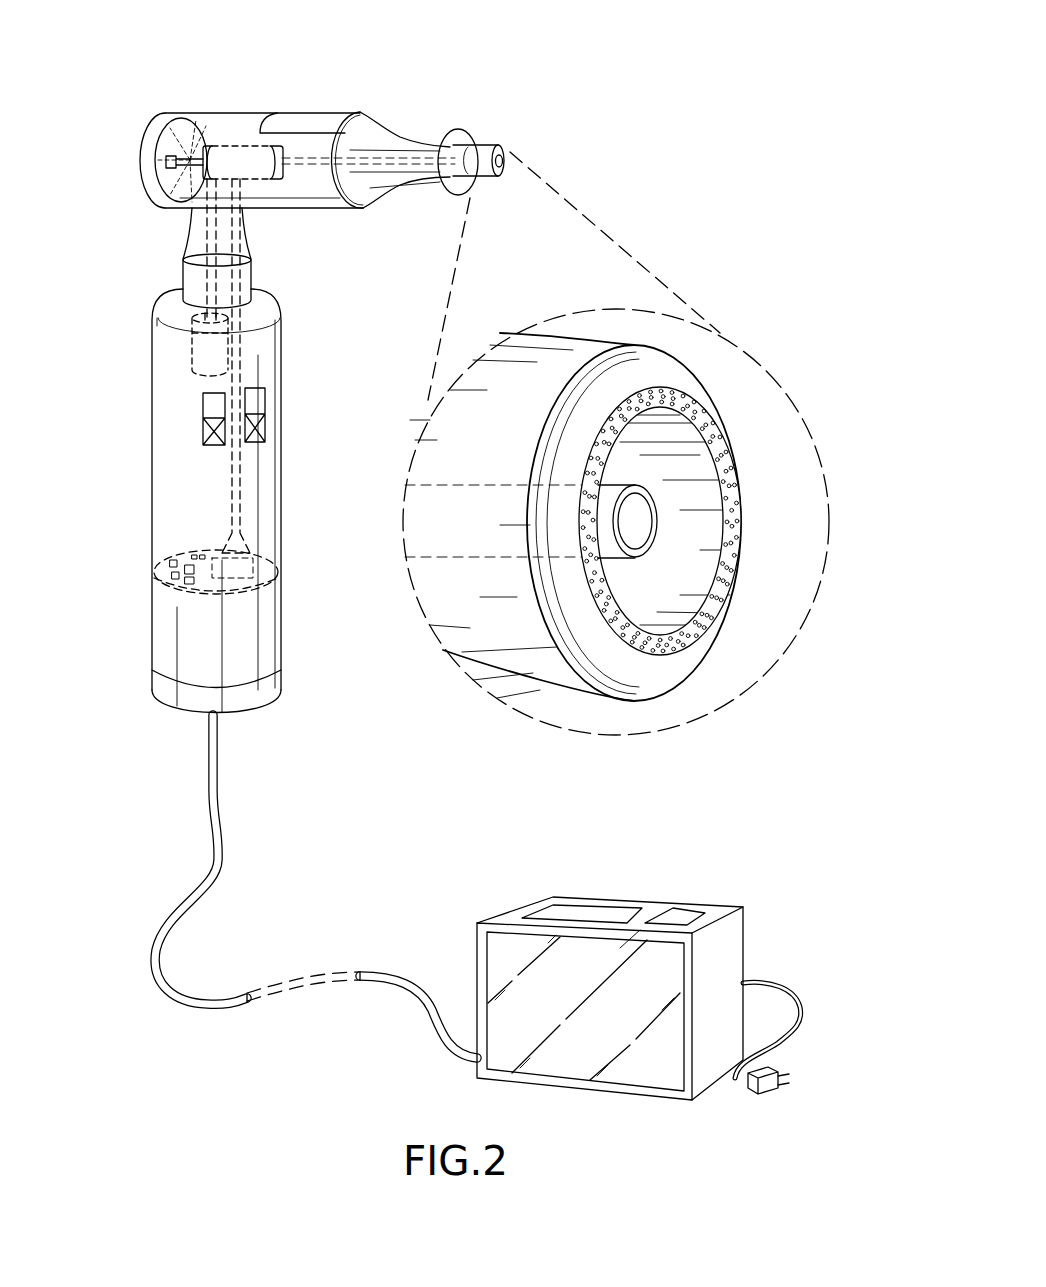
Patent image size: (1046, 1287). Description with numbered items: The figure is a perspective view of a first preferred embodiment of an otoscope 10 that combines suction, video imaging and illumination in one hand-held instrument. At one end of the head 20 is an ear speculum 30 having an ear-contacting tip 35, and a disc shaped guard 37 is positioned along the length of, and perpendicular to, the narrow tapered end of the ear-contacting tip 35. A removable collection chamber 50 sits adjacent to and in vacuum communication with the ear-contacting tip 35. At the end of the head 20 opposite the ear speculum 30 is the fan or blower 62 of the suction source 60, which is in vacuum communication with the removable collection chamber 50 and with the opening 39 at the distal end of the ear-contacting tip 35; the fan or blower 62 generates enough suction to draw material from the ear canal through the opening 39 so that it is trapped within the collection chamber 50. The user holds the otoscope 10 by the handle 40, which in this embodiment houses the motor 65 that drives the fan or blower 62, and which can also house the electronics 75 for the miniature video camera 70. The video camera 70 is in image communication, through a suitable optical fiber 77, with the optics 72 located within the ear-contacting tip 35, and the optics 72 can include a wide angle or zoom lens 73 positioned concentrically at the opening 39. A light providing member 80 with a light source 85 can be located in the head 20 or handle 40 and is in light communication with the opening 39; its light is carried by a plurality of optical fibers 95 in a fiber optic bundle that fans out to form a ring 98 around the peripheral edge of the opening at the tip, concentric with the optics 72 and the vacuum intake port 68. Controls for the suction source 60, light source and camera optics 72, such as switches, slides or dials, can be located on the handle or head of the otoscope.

The otoscope 10 is at (127, 147).
The head 20 is at (245, 107).
The ear speculum 30 is at (388, 138).
The ear-contacting tip 35 is at (497, 145).
The disc shaped guard 37 is at (460, 128).
The opening 39 is at (515, 167).
The handle 40 is at (282, 533).
The removable collection chamber 50 is at (313, 122).
The suction source 60 is at (192, 200).
The fan or blower 62 is at (180, 184).
The motor 65 is at (200, 343).
The vacuum intake port 68 is at (675, 434).
The miniature video camera 70 is at (243, 568).
The optics 72 is at (450, 192).
The wide angle or zoom lens 73 is at (634, 520).
The electronics 75 is at (230, 593).
The optical fiber 77 is at (248, 242).
The light providing member 80 is at (262, 156).
The light source 85 is at (258, 178).
The optical fibers 95 is at (630, 403).
The ring 98 is at (587, 582).